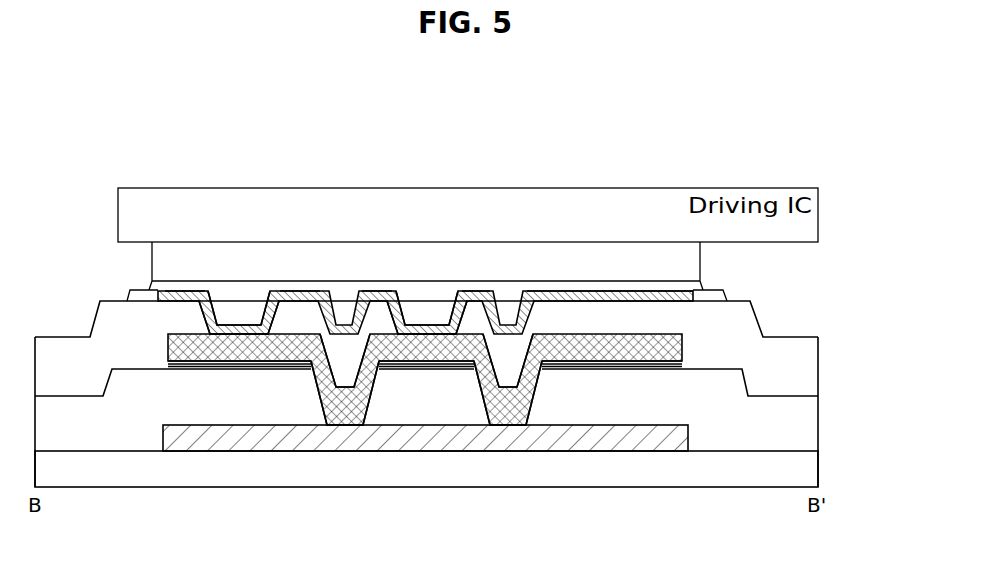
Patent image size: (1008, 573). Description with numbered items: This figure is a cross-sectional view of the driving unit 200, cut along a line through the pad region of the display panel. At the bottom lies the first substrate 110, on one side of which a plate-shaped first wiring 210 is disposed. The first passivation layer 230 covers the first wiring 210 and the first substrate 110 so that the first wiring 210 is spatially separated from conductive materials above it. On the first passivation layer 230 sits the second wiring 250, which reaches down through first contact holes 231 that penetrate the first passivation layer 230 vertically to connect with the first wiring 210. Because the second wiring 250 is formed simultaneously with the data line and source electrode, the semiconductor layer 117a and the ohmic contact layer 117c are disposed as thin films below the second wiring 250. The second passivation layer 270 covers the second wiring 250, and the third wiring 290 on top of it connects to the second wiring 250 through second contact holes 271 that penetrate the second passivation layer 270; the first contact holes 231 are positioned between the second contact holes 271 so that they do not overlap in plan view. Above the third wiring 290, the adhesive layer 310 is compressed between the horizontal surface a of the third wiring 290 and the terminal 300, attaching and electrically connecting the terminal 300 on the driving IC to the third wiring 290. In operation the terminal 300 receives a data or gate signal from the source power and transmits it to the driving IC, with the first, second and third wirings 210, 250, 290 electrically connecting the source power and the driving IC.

The driving unit 200 is at (448, 111).
The first substrate 110 is at (802, 470).
The first wiring 210 is at (250, 438).
The first passivation layer 230 is at (802, 423).
The first contact hole 231 is at (356, 364).
The second wiring 250 is at (568, 350).
The semiconductor layer 117a is at (607, 363).
The ohmic contact layer 117c is at (662, 363).
The second passivation layer 270 is at (802, 367).
The second contact hole 271 is at (230, 313).
The third wiring 290 is at (666, 297).
The terminal 300 is at (688, 262).
The adhesive layer 310 is at (611, 291).
The horizontal surface a is at (185, 282).